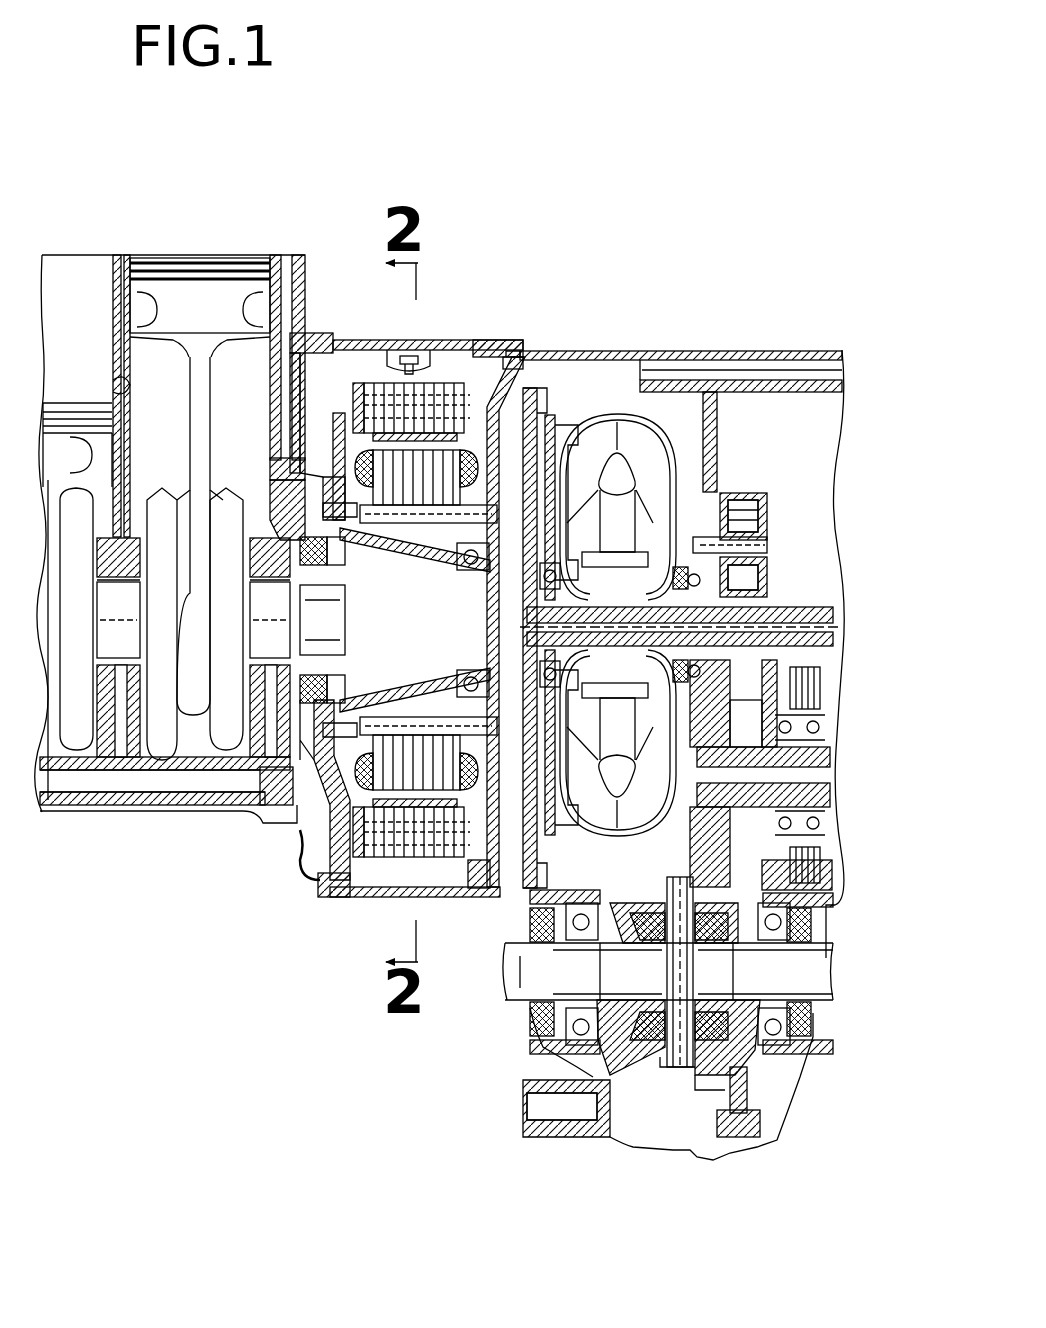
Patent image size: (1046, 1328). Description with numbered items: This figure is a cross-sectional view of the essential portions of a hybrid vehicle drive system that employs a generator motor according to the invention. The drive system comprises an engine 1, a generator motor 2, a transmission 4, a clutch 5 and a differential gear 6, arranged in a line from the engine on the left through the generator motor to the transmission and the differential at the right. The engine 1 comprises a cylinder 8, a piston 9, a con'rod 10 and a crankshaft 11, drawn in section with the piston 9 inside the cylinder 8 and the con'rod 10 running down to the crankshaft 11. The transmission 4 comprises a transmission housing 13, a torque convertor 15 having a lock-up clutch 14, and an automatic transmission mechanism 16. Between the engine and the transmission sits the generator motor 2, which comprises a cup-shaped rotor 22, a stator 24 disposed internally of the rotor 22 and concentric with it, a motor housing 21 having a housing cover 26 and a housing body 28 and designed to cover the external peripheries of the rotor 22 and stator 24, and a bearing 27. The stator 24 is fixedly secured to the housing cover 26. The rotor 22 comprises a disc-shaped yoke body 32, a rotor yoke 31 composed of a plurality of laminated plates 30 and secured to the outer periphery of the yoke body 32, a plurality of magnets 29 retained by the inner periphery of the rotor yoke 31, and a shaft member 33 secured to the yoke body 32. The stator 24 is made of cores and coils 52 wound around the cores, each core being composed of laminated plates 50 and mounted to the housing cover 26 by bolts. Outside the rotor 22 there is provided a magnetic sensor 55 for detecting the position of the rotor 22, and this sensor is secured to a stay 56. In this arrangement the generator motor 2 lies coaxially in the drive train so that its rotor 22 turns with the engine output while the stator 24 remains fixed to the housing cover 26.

The engine 1 is at (238, 196).
The generator motor 2 is at (453, 214).
The transmission 4 is at (651, 254).
The clutch 5 is at (843, 853).
The differential gear 6 is at (672, 1097).
The cylinder 8 is at (118, 386).
The piston 9 is at (142, 258).
The con'rod 10 is at (212, 432).
The crankshaft 11 is at (190, 772).
The transmission housing 13 is at (632, 352).
The lock-up clutch 14 is at (570, 348).
The torque convertor 15 is at (606, 352).
The automatic transmission mechanism 16 is at (736, 494).
The motor housing 21 is at (463, 345).
The rotor 22 is at (326, 824).
The stator 24 is at (415, 506).
The housing cover 26 is at (518, 345).
The bearing 27 is at (478, 566).
The housing body 28 is at (356, 340).
The magnets 29 is at (468, 874).
The laminated plates 30 is at (440, 862).
The rotor yoke 31 is at (393, 874).
The yoke body 32 is at (292, 852).
The shaft member 33 is at (398, 707).
The laminated plates 50 is at (421, 529).
The coils 52 is at (462, 542).
The magnetic sensor 55 is at (380, 346).
The stay 56 is at (419, 346).